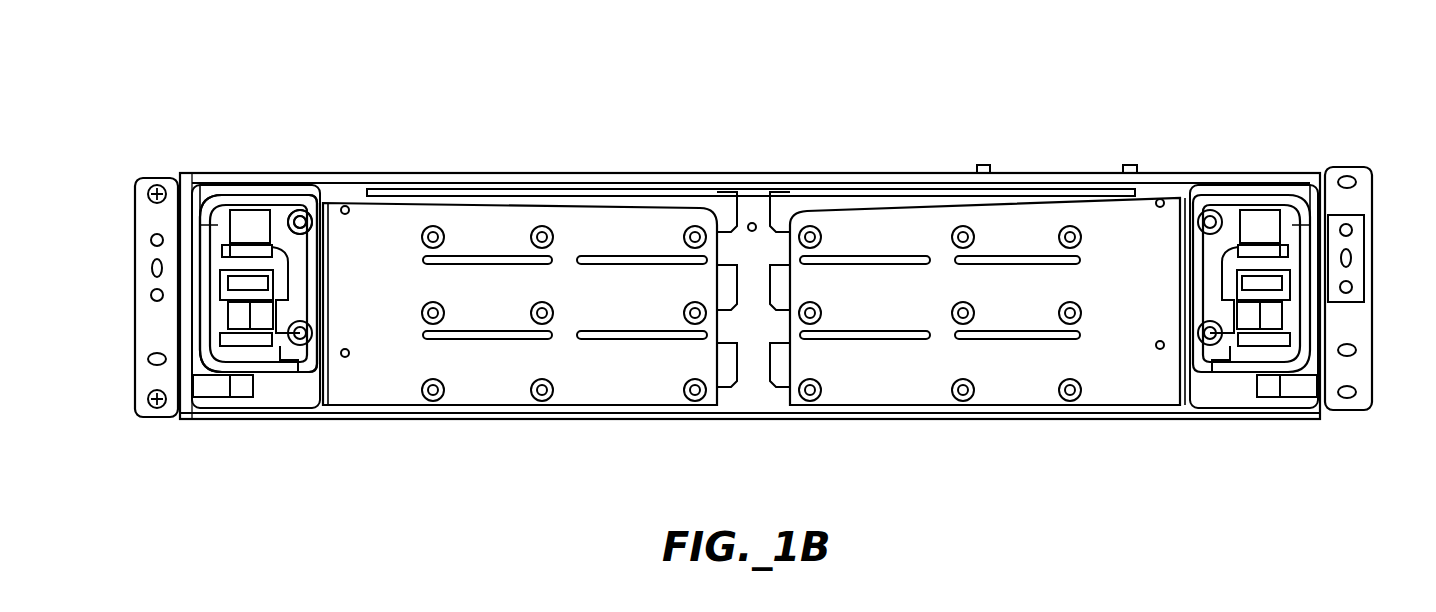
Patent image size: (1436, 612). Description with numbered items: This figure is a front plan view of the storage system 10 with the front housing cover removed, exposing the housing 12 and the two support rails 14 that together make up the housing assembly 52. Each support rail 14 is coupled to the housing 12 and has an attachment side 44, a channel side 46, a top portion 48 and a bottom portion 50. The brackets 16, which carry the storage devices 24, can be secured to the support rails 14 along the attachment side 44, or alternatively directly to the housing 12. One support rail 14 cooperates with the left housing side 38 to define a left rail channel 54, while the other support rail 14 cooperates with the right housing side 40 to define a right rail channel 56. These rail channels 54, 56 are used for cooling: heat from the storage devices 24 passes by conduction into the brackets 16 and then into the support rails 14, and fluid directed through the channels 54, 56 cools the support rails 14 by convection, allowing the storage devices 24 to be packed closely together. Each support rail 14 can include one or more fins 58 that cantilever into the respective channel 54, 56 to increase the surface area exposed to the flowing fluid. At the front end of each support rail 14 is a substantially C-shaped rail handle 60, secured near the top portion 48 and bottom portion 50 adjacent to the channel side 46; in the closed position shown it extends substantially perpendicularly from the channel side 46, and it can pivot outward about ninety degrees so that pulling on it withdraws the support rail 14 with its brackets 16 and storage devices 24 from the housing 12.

The storage system 10 is at (1097, 86).
The housing 12 is at (160, 268).
The support rail 14 is at (237, 212).
The bracket 16 is at (608, 388).
The storage device 24 is at (722, 387).
The left housing side 38 is at (172, 417).
The right housing side 40 is at (1360, 327).
The attachment side 44 is at (322, 357).
The channel side 46 is at (284, 210).
The top portion 48 is at (278, 212).
The bottom portion 50 is at (290, 405).
The housing assembly 52 is at (277, 276).
The left rail channel 54 is at (270, 385).
The right rail channel 56 is at (1243, 333).
The fin 58 is at (1242, 235).
The rail handle 60 is at (1290, 200).